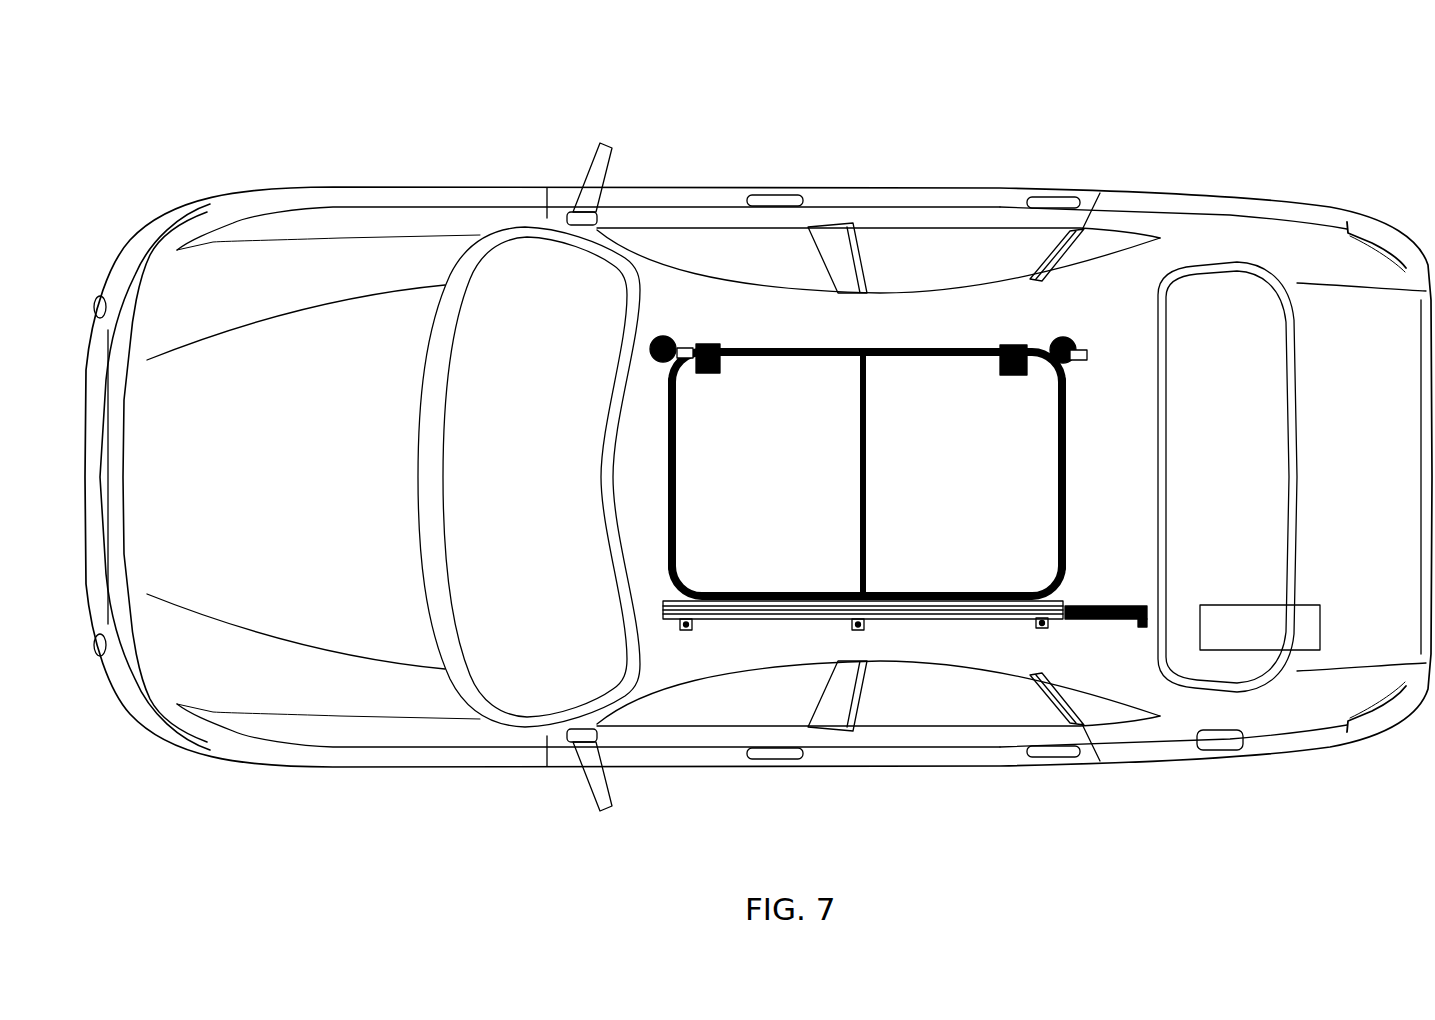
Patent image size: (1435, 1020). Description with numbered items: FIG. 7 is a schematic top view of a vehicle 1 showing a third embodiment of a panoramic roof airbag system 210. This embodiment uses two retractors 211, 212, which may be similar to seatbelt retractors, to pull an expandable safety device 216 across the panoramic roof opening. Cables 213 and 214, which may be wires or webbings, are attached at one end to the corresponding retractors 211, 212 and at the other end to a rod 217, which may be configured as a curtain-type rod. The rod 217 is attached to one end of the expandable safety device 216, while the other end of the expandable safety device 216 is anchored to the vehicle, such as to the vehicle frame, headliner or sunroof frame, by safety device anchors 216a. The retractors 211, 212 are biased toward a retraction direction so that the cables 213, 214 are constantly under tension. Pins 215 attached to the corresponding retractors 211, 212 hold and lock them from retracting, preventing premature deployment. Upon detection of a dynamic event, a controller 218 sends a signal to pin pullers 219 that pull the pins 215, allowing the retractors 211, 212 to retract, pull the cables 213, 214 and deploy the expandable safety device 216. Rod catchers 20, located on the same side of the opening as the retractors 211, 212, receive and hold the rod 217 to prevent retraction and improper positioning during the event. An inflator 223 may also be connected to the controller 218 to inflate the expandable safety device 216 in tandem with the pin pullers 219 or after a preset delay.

The vehicle 1 is at (204, 91).
The rod catchers 20 is at (1007, 345).
The panoramic roof airbag system 210 is at (600, 362).
The retractor 211 is at (662, 338).
The retractor 212 is at (1061, 338).
The cable 213 is at (657, 455).
The cable 214 is at (1068, 498).
The pins 215 is at (684, 348).
The expandable safety device 216 is at (667, 615).
The safety device anchors 216a is at (1040, 628).
The rod 217 is at (662, 600).
The controller 218 is at (1146, 622).
The pin pullers 219 is at (690, 362).
The inflator 223 is at (1095, 622).